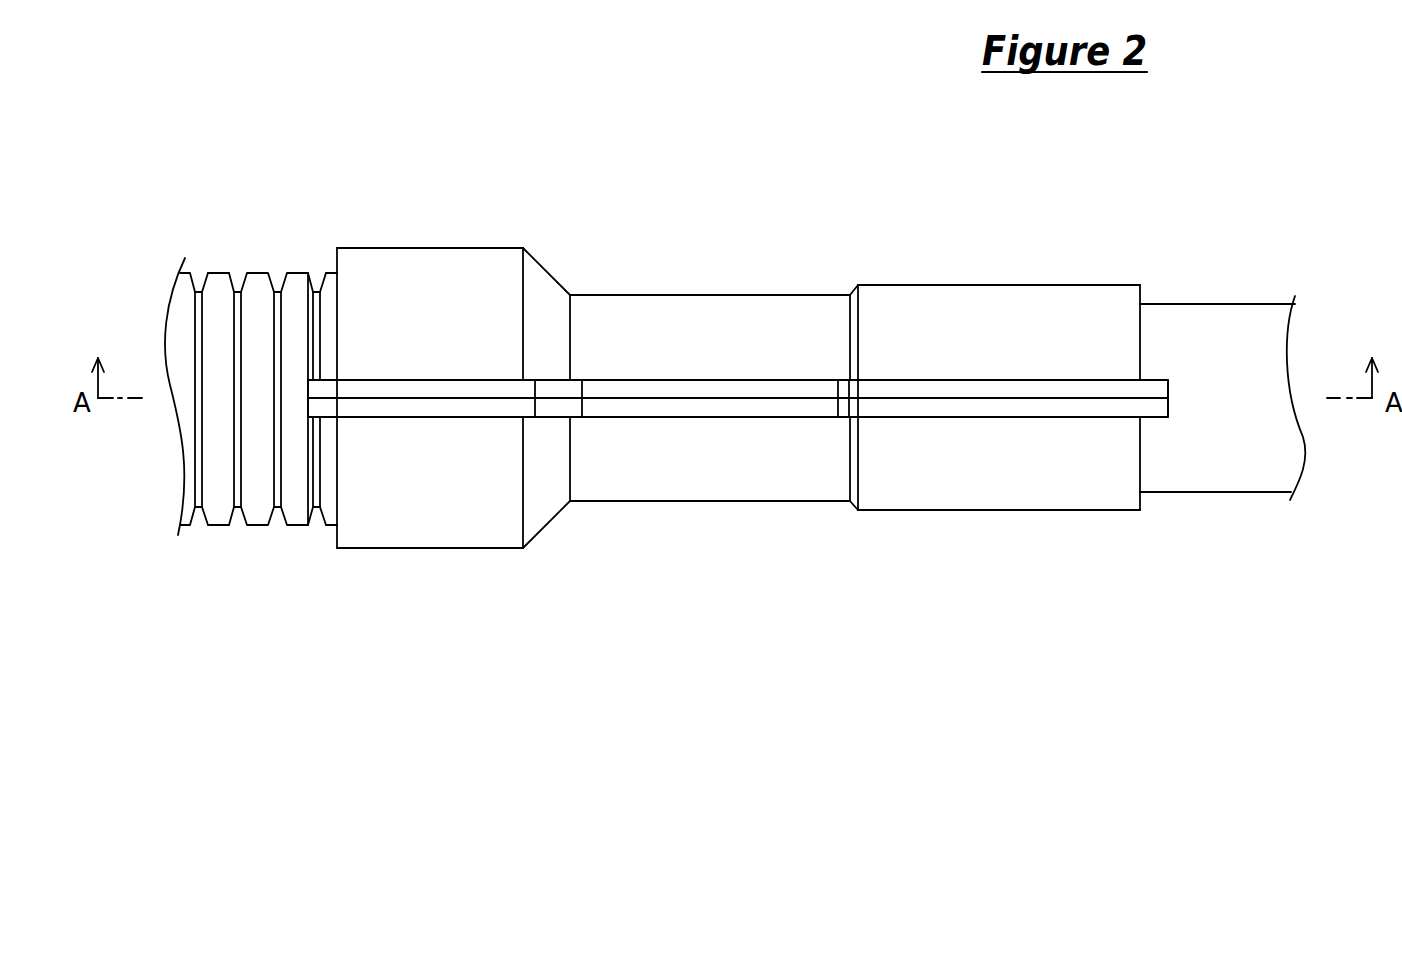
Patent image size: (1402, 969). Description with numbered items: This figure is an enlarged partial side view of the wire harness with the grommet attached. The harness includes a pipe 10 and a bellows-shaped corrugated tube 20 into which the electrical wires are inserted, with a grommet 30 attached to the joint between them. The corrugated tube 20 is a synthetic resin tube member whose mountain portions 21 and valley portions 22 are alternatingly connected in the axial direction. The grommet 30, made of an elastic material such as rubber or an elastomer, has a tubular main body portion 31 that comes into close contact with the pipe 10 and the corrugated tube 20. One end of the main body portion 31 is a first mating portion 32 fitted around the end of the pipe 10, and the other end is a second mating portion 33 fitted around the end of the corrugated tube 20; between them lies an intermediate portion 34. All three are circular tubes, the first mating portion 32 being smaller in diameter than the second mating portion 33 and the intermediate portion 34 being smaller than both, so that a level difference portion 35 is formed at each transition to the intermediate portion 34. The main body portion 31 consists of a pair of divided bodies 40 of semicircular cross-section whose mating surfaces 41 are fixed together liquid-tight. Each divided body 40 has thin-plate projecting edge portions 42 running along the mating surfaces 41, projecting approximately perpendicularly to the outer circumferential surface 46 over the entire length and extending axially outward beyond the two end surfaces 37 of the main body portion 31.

The pipe 10 is at (1233, 320).
The corrugated tube 20 is at (258, 281).
The mountain portion 21 is at (219, 507).
The valley portion 22 is at (278, 483).
The grommet 30 is at (735, 302).
The main body portion 31 is at (796, 305).
The first mating portion 32 is at (1055, 297).
The second mating portion 33 is at (432, 263).
The intermediate portion 34 is at (673, 308).
The level difference portion 35 is at (548, 497).
The end surface 37 is at (333, 498).
The divided body 40 is at (938, 330).
The mating surface 41 is at (1063, 392).
The projecting edge portion 42 is at (705, 387).
The outer circumferential surface 46 is at (765, 458).